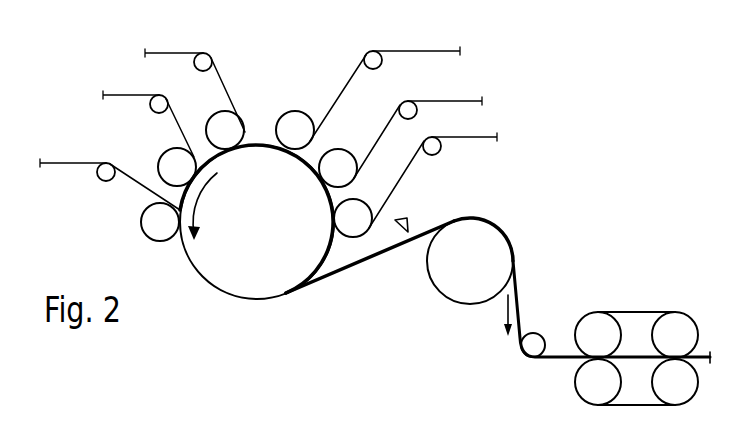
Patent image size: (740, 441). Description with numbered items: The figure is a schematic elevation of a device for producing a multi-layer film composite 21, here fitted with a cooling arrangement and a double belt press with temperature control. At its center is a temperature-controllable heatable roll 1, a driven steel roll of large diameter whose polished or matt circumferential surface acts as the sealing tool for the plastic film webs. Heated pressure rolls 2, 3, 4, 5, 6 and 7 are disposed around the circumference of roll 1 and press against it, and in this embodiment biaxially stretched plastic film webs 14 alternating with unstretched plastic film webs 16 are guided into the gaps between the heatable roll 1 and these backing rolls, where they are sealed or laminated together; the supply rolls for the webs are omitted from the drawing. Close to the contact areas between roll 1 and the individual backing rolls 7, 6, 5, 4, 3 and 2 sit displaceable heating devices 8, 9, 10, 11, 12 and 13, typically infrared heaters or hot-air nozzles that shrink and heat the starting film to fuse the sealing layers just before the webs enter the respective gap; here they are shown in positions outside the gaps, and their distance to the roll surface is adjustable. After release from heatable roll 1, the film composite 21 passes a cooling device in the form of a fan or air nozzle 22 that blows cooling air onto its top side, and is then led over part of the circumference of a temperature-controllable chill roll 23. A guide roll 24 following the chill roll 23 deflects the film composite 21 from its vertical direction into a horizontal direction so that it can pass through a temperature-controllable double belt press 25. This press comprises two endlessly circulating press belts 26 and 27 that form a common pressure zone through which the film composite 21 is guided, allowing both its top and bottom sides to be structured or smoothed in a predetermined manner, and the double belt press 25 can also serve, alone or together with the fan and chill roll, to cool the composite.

The heatable roll 1 is at (208, 272).
The pressure roll 2 is at (161, 237).
The pressure roll 3 is at (170, 152).
The pressure roll 4 is at (218, 120).
The pressure roll 5 is at (297, 120).
The pressure roll 6 is at (348, 157).
The pressure roll 7 is at (368, 206).
The displaceable heating device 8 is at (401, 198).
The displaceable heating device 9 is at (379, 164).
The displaceable heating device 10 is at (334, 128).
The displaceable heating device 11 is at (241, 106).
The displaceable heating device 12 is at (185, 128).
The displaceable heating device 13 is at (144, 180).
The biaxially stretched plastic film web 14 is at (176, 53).
The unstretched plastic film web 16 is at (118, 94).
The film composite 21 is at (367, 262).
The air nozzle 22 is at (407, 218).
The chill roll 23 is at (497, 240).
The guide roll 24 is at (530, 334).
The double belt press 25 is at (636, 352).
The press belt 26 is at (620, 310).
The press belt 27 is at (634, 406).